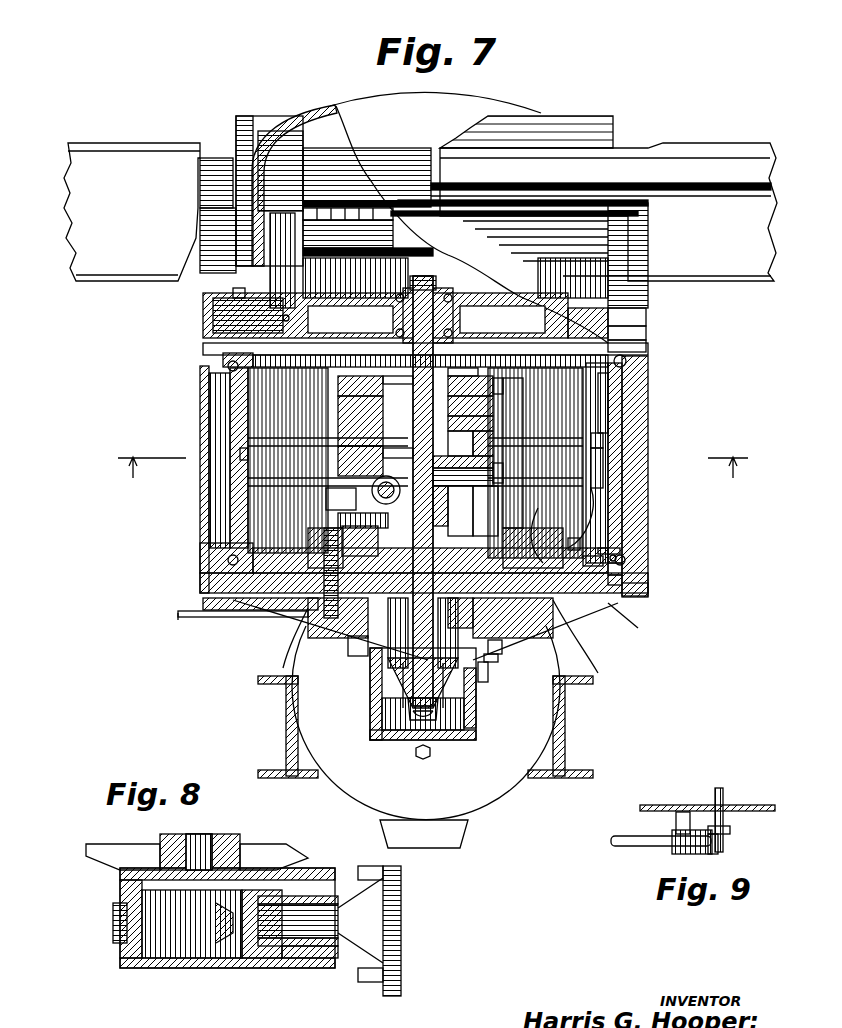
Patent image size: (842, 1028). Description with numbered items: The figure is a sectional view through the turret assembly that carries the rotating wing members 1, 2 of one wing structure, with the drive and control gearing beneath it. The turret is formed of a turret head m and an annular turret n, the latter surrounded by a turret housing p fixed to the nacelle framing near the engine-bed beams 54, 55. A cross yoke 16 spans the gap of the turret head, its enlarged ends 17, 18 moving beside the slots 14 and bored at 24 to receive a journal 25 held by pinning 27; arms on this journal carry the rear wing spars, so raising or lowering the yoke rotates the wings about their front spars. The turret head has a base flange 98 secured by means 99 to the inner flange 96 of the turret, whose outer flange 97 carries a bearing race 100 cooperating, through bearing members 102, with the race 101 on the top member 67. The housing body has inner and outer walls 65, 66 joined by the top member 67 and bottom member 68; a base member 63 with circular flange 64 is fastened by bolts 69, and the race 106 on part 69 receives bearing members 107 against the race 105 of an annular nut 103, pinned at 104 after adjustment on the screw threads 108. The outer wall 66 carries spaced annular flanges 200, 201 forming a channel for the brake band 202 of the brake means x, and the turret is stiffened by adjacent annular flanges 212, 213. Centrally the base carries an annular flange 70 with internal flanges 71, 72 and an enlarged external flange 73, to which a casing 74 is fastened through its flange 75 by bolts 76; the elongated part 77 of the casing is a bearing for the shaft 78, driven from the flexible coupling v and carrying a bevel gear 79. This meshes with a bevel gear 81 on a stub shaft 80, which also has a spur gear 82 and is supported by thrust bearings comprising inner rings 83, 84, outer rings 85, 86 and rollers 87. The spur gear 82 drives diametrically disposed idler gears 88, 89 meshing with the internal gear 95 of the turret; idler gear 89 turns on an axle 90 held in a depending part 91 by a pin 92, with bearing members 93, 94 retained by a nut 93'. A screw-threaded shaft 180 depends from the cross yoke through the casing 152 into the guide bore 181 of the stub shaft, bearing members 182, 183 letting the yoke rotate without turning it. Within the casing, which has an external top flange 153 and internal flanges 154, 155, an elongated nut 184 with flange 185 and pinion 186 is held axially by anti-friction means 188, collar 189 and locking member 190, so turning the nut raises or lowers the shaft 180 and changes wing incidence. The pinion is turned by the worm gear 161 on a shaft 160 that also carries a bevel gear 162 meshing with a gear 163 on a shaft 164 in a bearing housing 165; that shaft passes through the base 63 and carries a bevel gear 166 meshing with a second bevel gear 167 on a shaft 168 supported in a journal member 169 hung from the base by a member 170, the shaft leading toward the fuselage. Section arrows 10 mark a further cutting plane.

In FIG. 7, the wing member 1 is at (128, 135).
In FIG. 7, the wing member 2 is at (718, 144).
In FIG. 7, the turret head m is at (600, 125).
In FIG. 7, the slot 14 is at (250, 262).
In FIG. 7, the bore 24 is at (230, 285).
In FIG. 7, the journal 25 is at (230, 310).
In FIG. 7, the pin 27 is at (275, 312).
In FIG. 7, the cross yoke 16 is at (345, 290).
In FIG. 7, the enlarged end of cross yoke 17 is at (318, 316).
In FIG. 7, the screw-threaded shaft 180 is at (468, 314).
In FIG. 7, the lower bearing member 183 is at (400, 285).
In FIG. 7, the upper bearing member 182 is at (442, 289).
In FIG. 7, the enlarged end of cross yoke 18 is at (640, 295).
In FIG. 7, the base flange 98 is at (640, 310).
In FIG. 7, the outer flange 97 is at (600, 322).
In FIG. 7, the annular bearing race 100 is at (638, 330).
In FIG. 7, the top member 67 is at (638, 340).
In FIG. 7, the bearing members 102 is at (618, 353).
In FIG. 7, the annular bearing race 101 is at (640, 384).
In FIG. 7, the annular flange 200 is at (595, 420).
In FIG. 7, the brake band 202 is at (592, 440).
In FIG. 7, the annular flange 201 is at (588, 460).
In FIG. 7, the inner wall 65 is at (640, 471).
In FIG. 7, the outer wall 66 is at (612, 487).
In FIG. 7, the internal gear 95 is at (560, 538).
In FIG. 7, the bottom member 68 is at (595, 530).
In FIG. 7, the annular bearing race 106 is at (612, 542).
In FIG. 7, the bearing members 107 is at (610, 550).
In FIG. 7, the circular flange 64 is at (600, 555).
In FIG. 7, the annular nut 103 is at (614, 560).
In FIG. 7, the bolts 69 is at (614, 572).
In FIG. 7, the pin 104 is at (640, 582).
In FIG. 7, the base member 63 is at (608, 597).
In FIG. 9, the base member 63 is at (767, 800).
In FIG. 7, the idler gear 88 is at (618, 622).
In FIG. 7, the internal annular flange 72 is at (540, 622).
In FIG. 7, the external annular flange 73 is at (494, 640).
In FIG. 7, the annular flange 75 is at (490, 652).
In FIG. 7, the bolts 76 is at (478, 665).
In FIG. 7, the lower inner bearing ring 84 is at (470, 690).
In FIG. 7, the bevel gear 81 is at (458, 695).
In FIG. 8, the bevel gear 81 is at (105, 912).
In FIG. 7, the bevel gear 79 is at (435, 712).
In FIG. 8, the bevel gear 79 is at (222, 940).
In FIG. 7, the shaft 78 is at (412, 712).
In FIG. 8, the shaft 78 is at (270, 912).
In FIG. 7, the housing or casing 74 is at (380, 730).
In FIG. 7, the beam 55 is at (557, 725).
In FIG. 7, the beam 54 is at (278, 726).
In FIG. 7, the guide bore 181 is at (390, 658).
In FIG. 7, the lower outer bearing ring 86 is at (350, 630).
In FIG. 7, the depending part 91 is at (305, 610).
In FIG. 7, the pin 92 is at (290, 612).
In FIG. 7, the idler gear 89 is at (275, 606).
In FIG. 7, the lower bearing member 94 is at (245, 612).
In FIG. 7, the axle 90 is at (300, 596).
In FIG. 7, the upper outer bearing ring 85 is at (392, 598).
In FIG. 7, the stub shaft 80 is at (395, 612).
In FIG. 8, the stub shaft 80 is at (210, 825).
In FIG. 7, the internal annular flange 71 is at (455, 600).
In FIG. 7, the annular flange 70 is at (448, 614).
In FIG. 7, the annular bearing race 105 is at (550, 592).
In FIG. 7, the spur gear 82 is at (460, 512).
In FIG. 7, the rollers 87 is at (440, 492).
In FIG. 7, the upper inner bearing ring 83 is at (470, 535).
In FIG. 7, the screw threads 108 is at (540, 540).
In FIG. 7, the worm gear 161 is at (470, 476).
In FIG. 7, the shaft 160 is at (470, 456).
In FIG. 7, the pinion gear 186 is at (495, 466).
In FIG. 7, the second bevel gear 167 is at (462, 432).
In FIG. 9, the second bevel gear 167 is at (708, 846).
In FIG. 7, the annular flange 185 is at (486, 434).
In FIG. 7, the casing or housing 152 is at (462, 415).
In FIG. 7, the elongated nut 184 is at (462, 396).
In FIG. 7, the anti-friction means 188 is at (458, 380).
In FIG. 7, the inner flange 96 is at (495, 380).
In FIG. 7, the collar 189 is at (470, 368).
In FIG. 7, the securing means 99 is at (516, 392).
In FIG. 7, the external top flange 153 is at (385, 376).
In FIG. 7, the locking member 190 is at (380, 390).
In FIG. 7, the internal annular flange 154 is at (378, 405).
In FIG. 7, the internal annular flange 155 is at (385, 450).
In FIG. 7, the bevel gear 162 is at (378, 448).
In FIG. 7, the gear 163 is at (368, 480).
In FIG. 7, the nut 93' is at (341, 499).
In FIG. 7, the upper bearing member 93 is at (319, 559).
In FIG. 7, the bearing housing 165 is at (363, 518).
In FIG. 7, the shaft 164 is at (375, 540).
In FIG. 9, the shaft 164 is at (715, 782).
In FIG. 7, the turret n is at (240, 389).
In FIG. 7, the turret housing p is at (195, 410).
In FIG. 7, the annular flange 212 is at (255, 435).
In FIG. 7, the brake means x is at (235, 452).
In FIG. 7, the section line 10 is at (433, 482).
In FIG. 7, the annular flange 213 is at (240, 452).
In FIG. 8, the elongated part 77 is at (300, 950).
In FIG. 8, the flexible coupling v is at (369, 931).
In FIG. 9, the depending member 170 is at (665, 805).
In FIG. 9, the shaft 168 is at (620, 830).
In FIG. 9, the bevel gear 166 is at (722, 823).
In FIG. 9, the journal member 169 is at (664, 845).